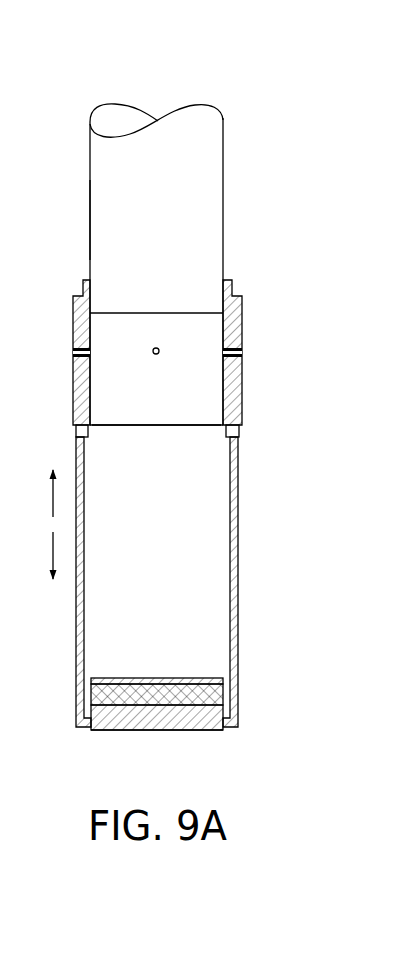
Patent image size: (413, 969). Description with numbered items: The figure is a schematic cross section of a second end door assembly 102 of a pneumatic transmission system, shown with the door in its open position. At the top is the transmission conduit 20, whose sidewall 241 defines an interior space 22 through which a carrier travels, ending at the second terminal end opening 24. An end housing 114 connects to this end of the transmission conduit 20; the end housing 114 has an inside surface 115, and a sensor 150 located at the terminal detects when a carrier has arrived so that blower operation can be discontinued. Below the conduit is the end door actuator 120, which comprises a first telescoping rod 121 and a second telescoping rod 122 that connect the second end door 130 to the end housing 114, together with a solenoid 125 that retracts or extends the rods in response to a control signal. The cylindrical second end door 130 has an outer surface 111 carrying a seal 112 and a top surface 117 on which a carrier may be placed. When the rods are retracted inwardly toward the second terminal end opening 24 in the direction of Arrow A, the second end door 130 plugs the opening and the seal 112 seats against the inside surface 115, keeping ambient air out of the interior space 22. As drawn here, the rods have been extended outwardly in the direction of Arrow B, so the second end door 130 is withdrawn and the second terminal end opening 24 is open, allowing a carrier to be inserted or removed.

The transmission conduit 20 is at (225, 162).
The interior space 22 is at (117, 177).
The sidewall 241 is at (90, 226).
The end housing 114 is at (73, 320).
The inside surface 115 is at (223, 397).
The sensor 150 is at (156, 346).
The solenoid 125 is at (75, 430).
The second terminal end opening 24 is at (159, 436).
The second end door assembly 102 is at (172, 349).
The end door actuator 120 is at (193, 611).
The first telescoping rod 121 is at (76, 604).
The second telescoping rod 122 is at (240, 617).
The top surface 117 is at (206, 678).
The seal 112 is at (212, 696).
The outer surface 111 is at (198, 722).
The second end door 130 is at (125, 731).
The Arrow A is at (52, 497).
The Arrow B is at (52, 550).